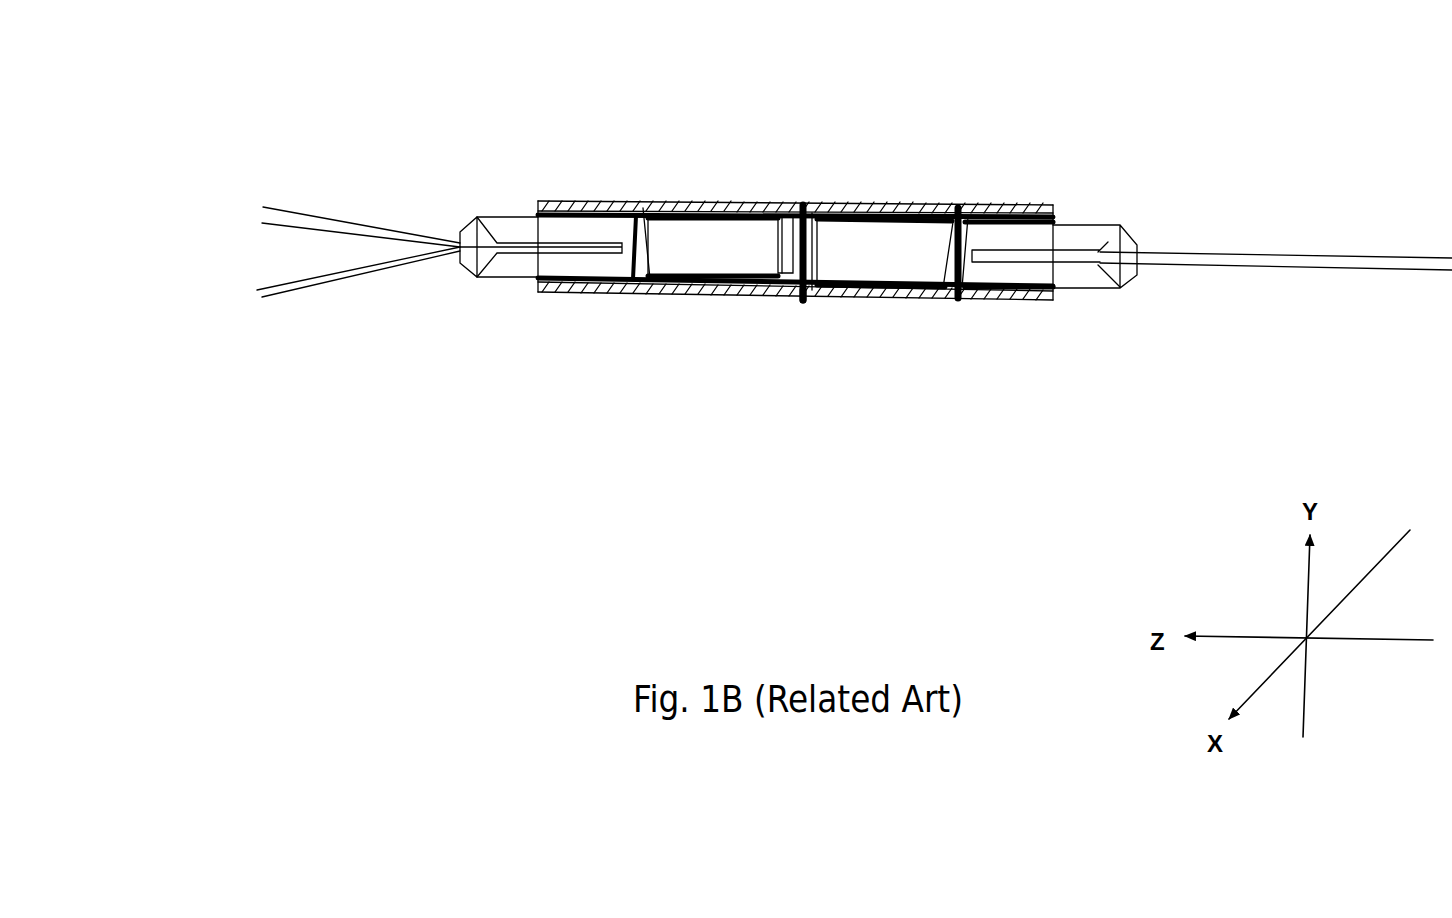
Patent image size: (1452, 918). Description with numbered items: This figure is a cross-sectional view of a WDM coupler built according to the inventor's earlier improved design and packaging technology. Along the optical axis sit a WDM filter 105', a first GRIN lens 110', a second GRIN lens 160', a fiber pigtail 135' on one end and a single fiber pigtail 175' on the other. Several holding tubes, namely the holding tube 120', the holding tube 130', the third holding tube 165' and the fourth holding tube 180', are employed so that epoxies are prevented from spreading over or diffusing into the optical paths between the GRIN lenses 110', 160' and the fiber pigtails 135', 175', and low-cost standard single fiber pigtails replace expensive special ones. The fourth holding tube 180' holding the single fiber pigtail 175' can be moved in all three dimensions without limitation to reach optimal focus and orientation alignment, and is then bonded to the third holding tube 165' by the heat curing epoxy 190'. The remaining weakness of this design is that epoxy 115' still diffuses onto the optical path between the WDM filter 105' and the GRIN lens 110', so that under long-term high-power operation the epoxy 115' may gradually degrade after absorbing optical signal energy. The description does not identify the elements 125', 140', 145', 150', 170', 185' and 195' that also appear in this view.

The WDM filter 105' is at (831, 199).
The GRIN lens 110' is at (720, 187).
The epoxy 115' is at (785, 156).
The holding tube 120' is at (794, 158).
The outer housing 125' is at (795, 402).
The holding tube 130' is at (729, 199).
The fiber pigtail 135' is at (483, 304).
The input light beam 140' is at (312, 203).
The output light beam 145' is at (302, 296).
The connector partition 150' is at (580, 344).
The GRIN lens 160' is at (888, 340).
The third holding tube 165' is at (943, 373).
The partition 170' is at (980, 200).
The single fiber pigtail 175' is at (1122, 285).
The fourth holding tube 180' is at (1073, 339).
The optical fiber 185' is at (1276, 223).
The heat curing epoxy 190' is at (1063, 192).
The partition base 195' is at (834, 408).